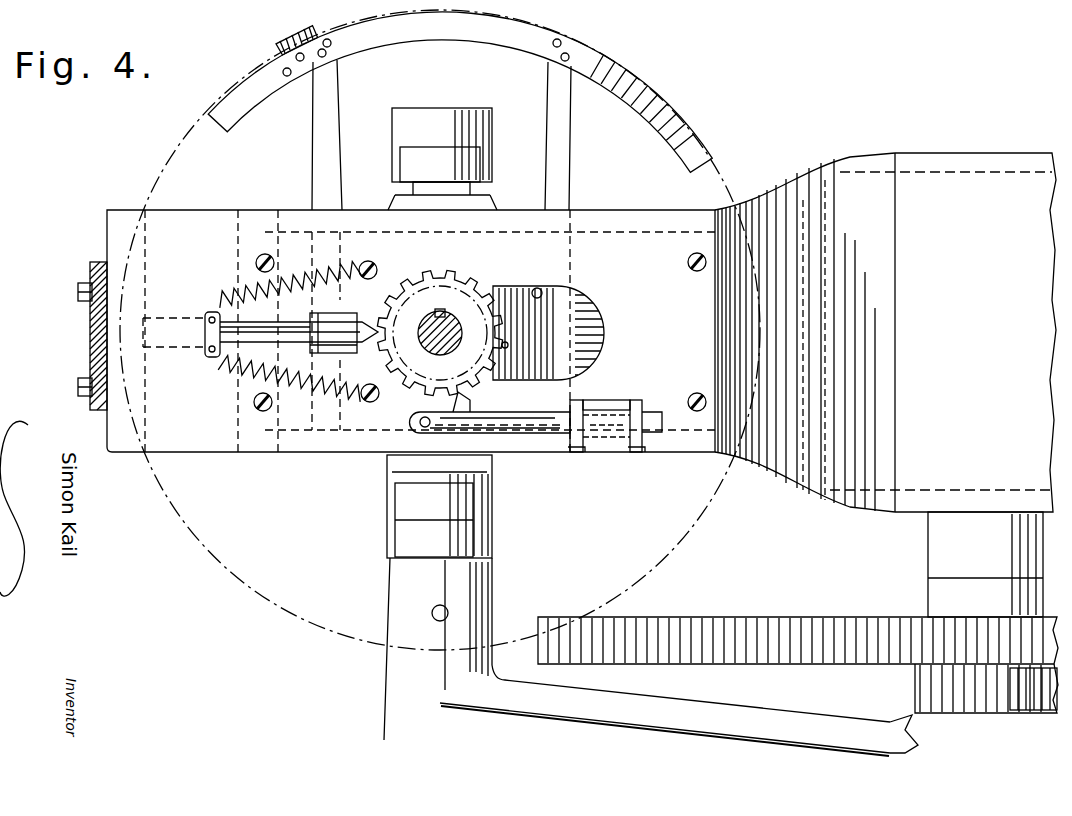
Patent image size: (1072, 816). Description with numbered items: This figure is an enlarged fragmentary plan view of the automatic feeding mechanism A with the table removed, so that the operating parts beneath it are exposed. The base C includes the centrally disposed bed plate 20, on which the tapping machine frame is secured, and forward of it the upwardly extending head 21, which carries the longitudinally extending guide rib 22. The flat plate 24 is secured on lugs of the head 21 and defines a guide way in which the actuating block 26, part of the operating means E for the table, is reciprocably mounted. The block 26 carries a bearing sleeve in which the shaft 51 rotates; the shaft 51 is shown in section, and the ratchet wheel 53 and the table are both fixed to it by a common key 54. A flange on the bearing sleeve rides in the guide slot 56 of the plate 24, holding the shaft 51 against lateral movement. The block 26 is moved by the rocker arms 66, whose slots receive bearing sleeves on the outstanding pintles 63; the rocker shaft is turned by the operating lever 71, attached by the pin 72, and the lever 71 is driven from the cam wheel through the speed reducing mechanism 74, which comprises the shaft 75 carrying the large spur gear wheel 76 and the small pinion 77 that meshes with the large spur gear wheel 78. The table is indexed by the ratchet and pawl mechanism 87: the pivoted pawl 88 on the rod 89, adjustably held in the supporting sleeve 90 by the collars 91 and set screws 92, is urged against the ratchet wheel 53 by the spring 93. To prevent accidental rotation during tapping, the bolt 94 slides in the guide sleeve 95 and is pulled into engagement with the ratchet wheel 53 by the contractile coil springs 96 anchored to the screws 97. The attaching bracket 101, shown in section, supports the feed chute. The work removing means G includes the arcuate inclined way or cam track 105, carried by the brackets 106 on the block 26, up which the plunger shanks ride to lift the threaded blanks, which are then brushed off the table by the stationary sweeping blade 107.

The bed plate 20 is at (957, 195).
The head 21 is at (725, 212).
The guide rib 22 is at (570, 322).
The flat plate 24 is at (522, 252).
The actuating block 26 is at (540, 337).
The shaft 51 is at (450, 333).
The ratchet wheel 53 is at (447, 322).
The key 54 is at (437, 312).
The guide slot 56 is at (550, 285).
The pintles 63 is at (440, 465).
The rocker arms 66 is at (430, 497).
The operating lever 71 is at (722, 712).
The pin 72 is at (432, 613).
The speed reducing mechanism 74 is at (836, 637).
The shaft 75 is at (990, 550).
The spur gear wheel 76 is at (733, 635).
The pinion 77 is at (955, 700).
The spur gear wheel 78 is at (1028, 700).
The ratchet and pawl mechanism 87 is at (507, 345).
The pawl 88 is at (437, 420).
The rod 89 is at (510, 432).
The supporting sleeve 90 is at (594, 452).
The collars 91 is at (578, 452).
The set screws 92 is at (640, 452).
The spring 93 is at (500, 456).
The bolt 94 is at (215, 345).
The guide sleeve 95 is at (330, 356).
The contractile coil springs 96 is at (293, 278).
The screws 97 is at (372, 298).
The attaching bracket 101 is at (95, 330).
The inclined way or cam track 105 is at (572, 52).
The brackets 106 is at (325, 110).
The sweeping blade 107 is at (283, 40).
The automatic feeding mechanism A is at (668, 440).
The base C is at (805, 208).
The operating means E is at (615, 700).
The work removing means G is at (645, 92).